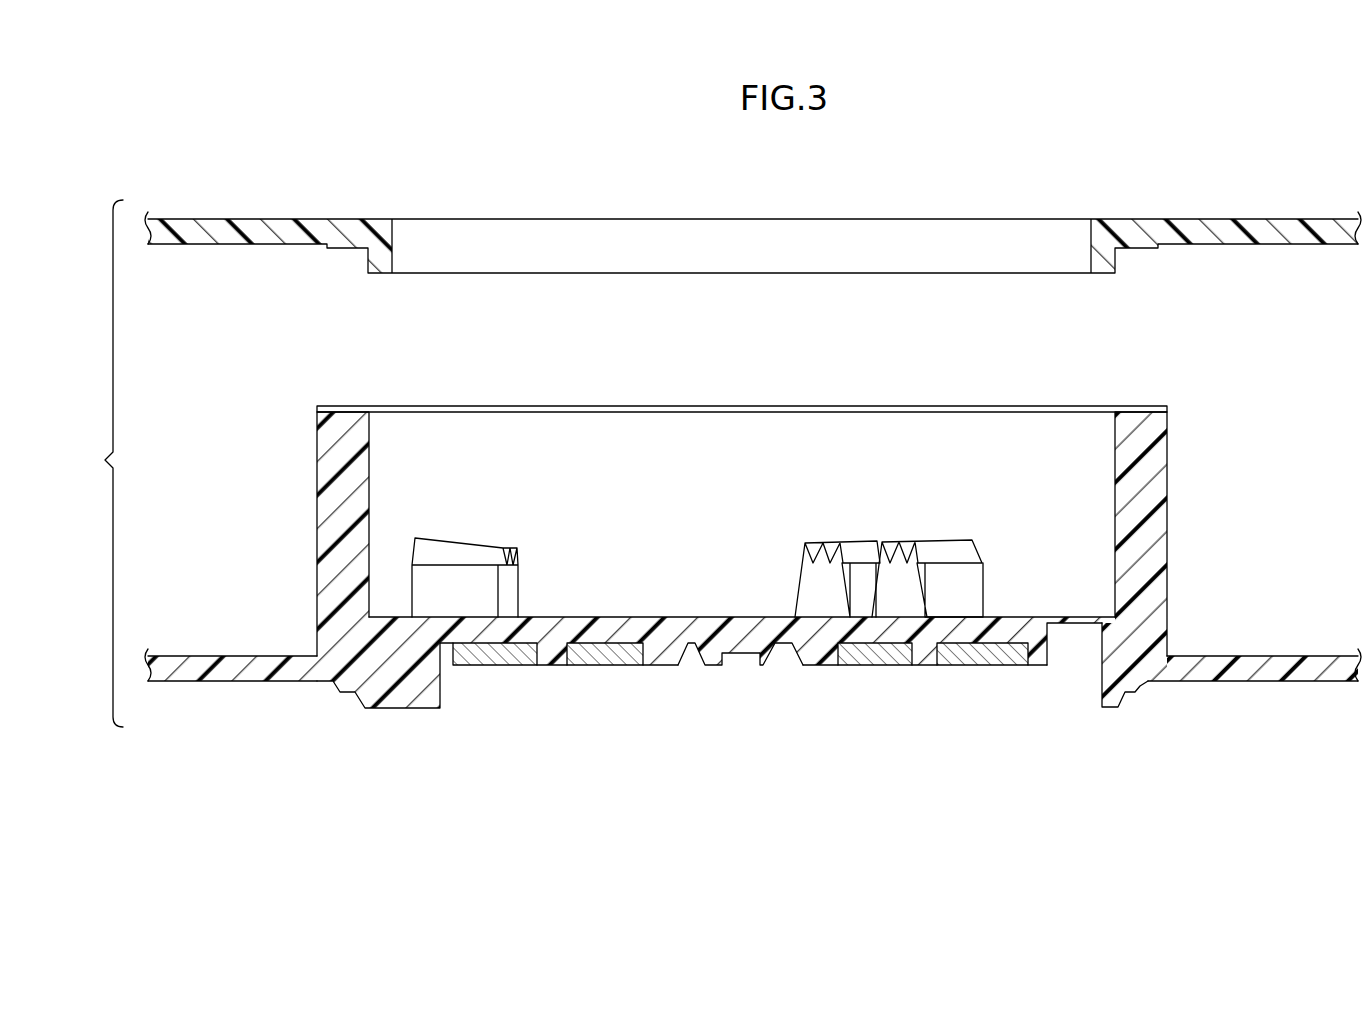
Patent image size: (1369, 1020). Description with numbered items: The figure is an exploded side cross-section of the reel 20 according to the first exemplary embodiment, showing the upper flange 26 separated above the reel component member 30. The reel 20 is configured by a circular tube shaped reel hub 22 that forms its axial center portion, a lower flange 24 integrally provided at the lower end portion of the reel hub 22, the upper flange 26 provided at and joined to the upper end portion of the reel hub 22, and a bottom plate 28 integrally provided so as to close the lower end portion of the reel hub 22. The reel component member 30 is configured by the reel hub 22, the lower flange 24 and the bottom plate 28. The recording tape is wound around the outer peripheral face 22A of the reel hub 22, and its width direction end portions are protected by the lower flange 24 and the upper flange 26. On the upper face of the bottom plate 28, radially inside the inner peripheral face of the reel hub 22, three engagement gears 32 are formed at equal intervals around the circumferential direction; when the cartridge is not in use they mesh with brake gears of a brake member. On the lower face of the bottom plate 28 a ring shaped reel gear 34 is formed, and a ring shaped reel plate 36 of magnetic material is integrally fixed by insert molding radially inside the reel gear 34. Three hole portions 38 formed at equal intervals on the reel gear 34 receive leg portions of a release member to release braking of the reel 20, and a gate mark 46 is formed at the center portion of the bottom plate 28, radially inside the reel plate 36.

The reel 20 is at (1243, 181).
The reel hub 22 is at (1178, 516).
The outer peripheral face 22A is at (317, 511).
The lower flange 24 is at (1296, 660).
The upper flange 26 is at (278, 218).
The bottom plate 28 is at (692, 616).
The reel component member 30 is at (1181, 402).
The engagement gears 32 is at (502, 548).
The reel gear 34 is at (405, 709).
The reel plate 36 is at (500, 666).
The hole portions 38 is at (1073, 655).
The gate mark 46 is at (737, 654).